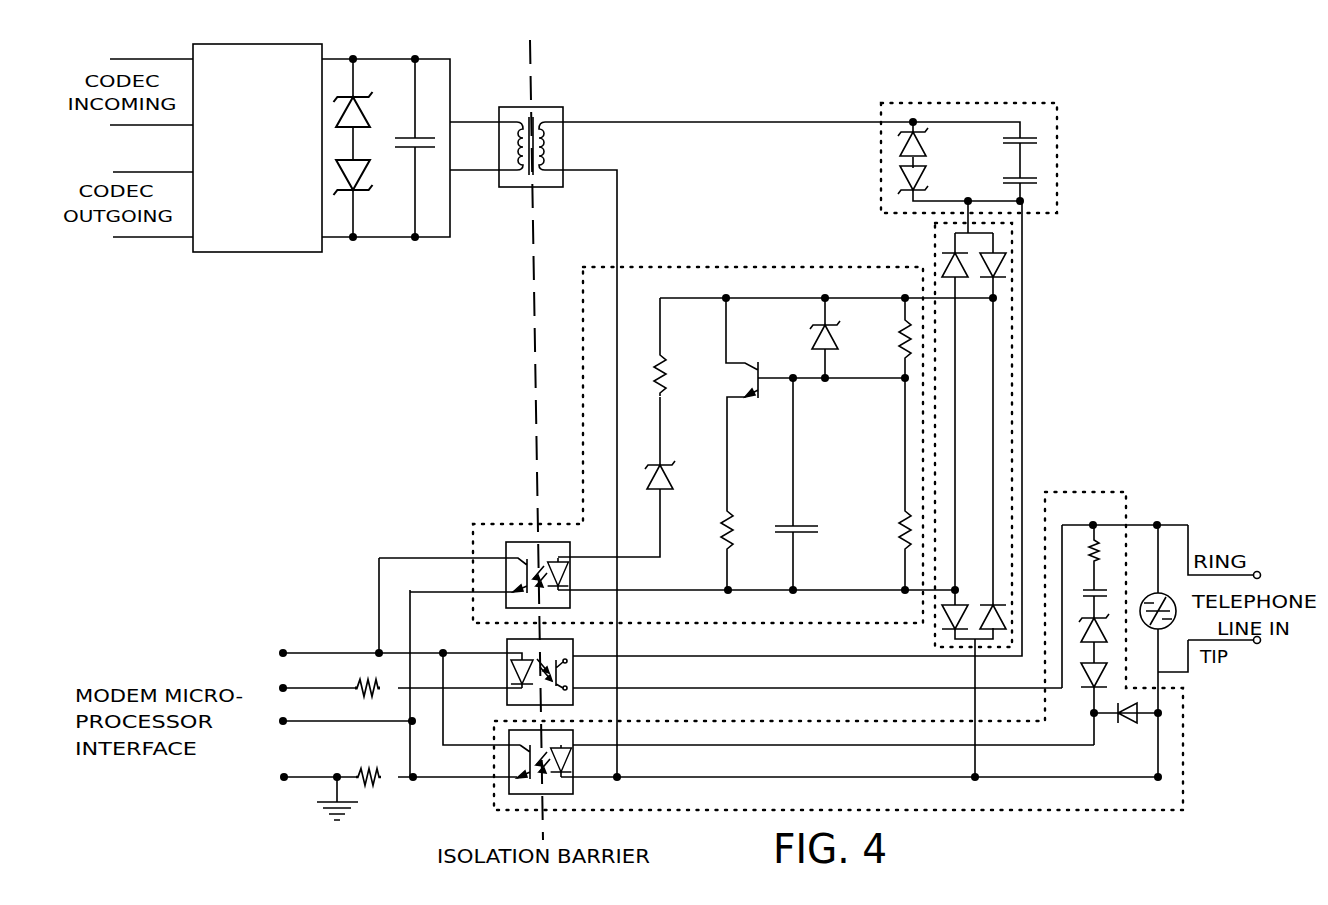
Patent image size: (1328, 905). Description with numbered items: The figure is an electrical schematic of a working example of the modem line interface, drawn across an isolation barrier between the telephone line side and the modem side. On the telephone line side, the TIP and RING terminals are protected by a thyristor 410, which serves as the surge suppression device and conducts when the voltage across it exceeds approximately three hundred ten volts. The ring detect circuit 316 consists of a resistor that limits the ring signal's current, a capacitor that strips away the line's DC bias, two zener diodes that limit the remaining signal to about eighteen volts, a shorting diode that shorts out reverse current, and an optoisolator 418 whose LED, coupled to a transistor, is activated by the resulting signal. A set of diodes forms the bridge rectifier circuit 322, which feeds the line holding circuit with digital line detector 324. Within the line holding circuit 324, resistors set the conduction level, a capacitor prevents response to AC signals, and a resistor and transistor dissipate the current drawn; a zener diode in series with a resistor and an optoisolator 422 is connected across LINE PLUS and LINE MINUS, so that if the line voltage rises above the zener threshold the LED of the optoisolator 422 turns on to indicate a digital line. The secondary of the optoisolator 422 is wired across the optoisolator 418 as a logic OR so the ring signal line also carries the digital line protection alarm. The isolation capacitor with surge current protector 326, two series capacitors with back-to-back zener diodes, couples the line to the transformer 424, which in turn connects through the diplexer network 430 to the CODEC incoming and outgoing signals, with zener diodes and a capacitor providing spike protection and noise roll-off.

The diplexer network 430 is at (283, 235).
The transformer 424 is at (547, 107).
The isolation capacitor with surge current protector 326 is at (1038, 112).
The line holding circuit with digital line detector 324 is at (676, 273).
The bridge rectifier circuit 322 is at (1002, 370).
The ring detect circuit 316 is at (1077, 508).
The thyristor 410 is at (1145, 523).
The optoisolator 422 is at (522, 552).
The optoisolator 418 is at (523, 785).